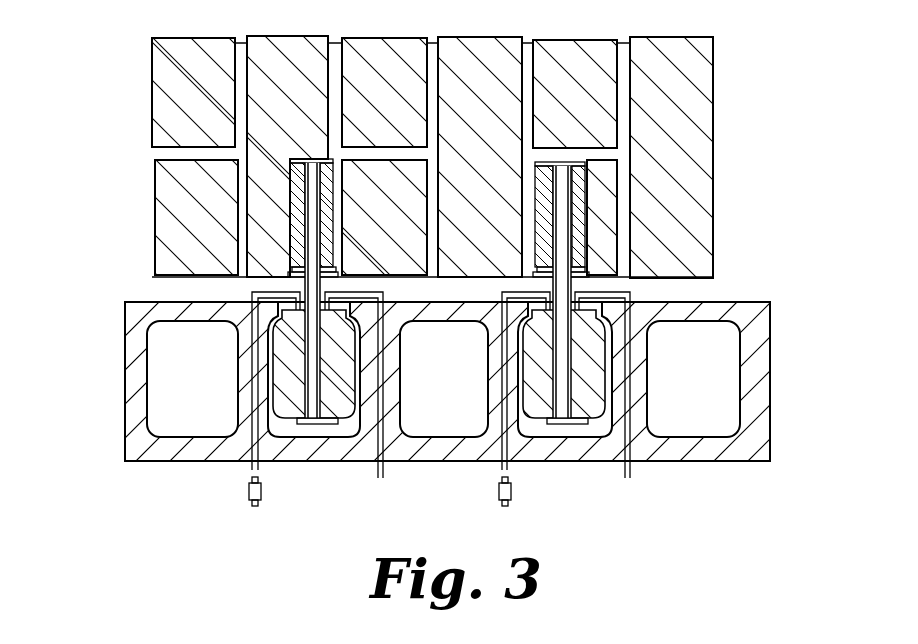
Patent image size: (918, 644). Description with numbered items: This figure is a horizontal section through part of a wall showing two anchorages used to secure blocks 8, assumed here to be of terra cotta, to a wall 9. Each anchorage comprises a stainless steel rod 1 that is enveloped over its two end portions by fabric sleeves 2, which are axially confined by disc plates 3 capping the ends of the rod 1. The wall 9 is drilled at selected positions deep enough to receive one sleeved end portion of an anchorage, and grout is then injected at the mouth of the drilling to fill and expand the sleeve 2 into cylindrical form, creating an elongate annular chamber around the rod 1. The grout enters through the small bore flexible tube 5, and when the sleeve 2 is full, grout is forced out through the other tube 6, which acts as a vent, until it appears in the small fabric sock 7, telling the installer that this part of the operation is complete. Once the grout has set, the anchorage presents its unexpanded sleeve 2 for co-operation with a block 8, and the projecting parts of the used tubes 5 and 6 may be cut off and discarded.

The stainless steel rod 1 is at (290, 279).
The fabric sleeve 2 is at (584, 205).
The disc plate 3 is at (308, 158).
The flexible tube 5 is at (384, 472).
The flexible tube 6 is at (258, 465).
The fabric sock 7 is at (250, 486).
The block 8 is at (177, 453).
The wall 9 is at (165, 103).